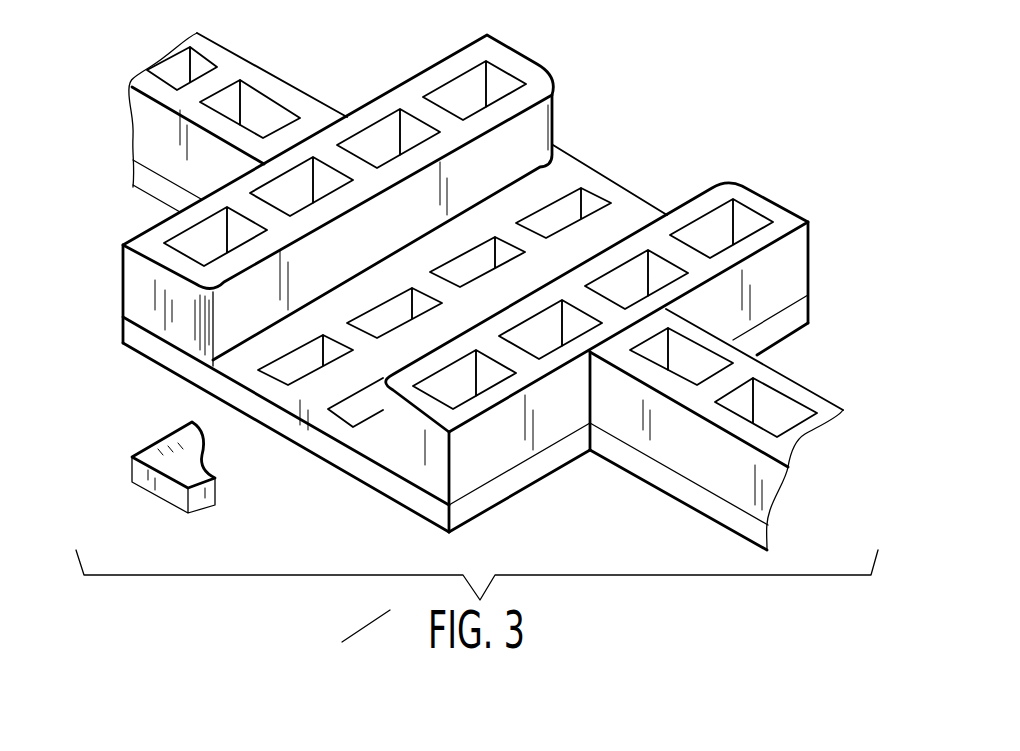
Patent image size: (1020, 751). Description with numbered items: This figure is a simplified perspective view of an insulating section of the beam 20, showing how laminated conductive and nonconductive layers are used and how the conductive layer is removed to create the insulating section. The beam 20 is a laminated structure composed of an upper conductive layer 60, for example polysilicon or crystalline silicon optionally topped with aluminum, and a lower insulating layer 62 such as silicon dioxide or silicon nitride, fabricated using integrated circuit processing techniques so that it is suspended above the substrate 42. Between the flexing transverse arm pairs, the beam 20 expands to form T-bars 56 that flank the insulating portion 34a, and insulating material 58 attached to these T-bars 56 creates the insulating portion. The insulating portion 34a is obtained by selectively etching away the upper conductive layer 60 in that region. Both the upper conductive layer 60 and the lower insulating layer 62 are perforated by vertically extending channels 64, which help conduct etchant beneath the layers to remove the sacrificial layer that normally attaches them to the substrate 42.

The beam 20 is at (823, 359).
The insulating portion 34a is at (268, 452).
The substrate 42 is at (173, 495).
The T-bars 56 is at (141, 293).
The insulating material 58 is at (311, 472).
The upper conductive layer 60 is at (150, 126).
The lower insulating layer 62 is at (147, 188).
The vertically extending channels 64 is at (740, 403).